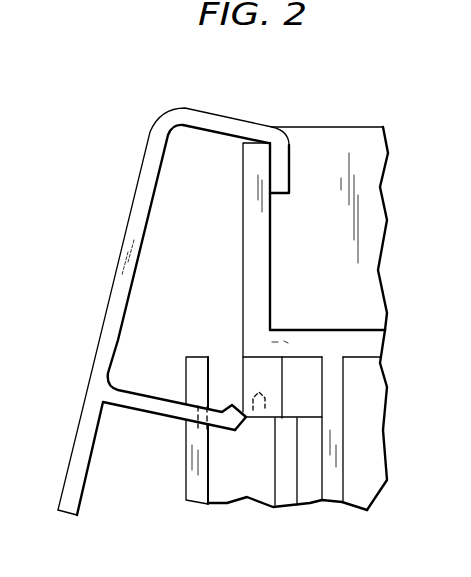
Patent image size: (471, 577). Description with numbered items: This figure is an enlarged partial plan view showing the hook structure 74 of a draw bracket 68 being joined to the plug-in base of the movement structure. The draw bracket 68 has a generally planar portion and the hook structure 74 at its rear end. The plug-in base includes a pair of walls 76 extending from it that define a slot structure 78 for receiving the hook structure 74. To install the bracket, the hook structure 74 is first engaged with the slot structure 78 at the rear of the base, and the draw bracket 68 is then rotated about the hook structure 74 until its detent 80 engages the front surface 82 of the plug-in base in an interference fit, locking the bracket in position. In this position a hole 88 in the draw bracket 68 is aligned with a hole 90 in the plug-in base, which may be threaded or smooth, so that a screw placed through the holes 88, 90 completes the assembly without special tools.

The draw bracket 68 is at (123, 235).
The hook structure 74 is at (289, 168).
The walls 76 is at (258, 245).
The slot structure 78 is at (270, 126).
The detent 80 is at (236, 428).
The surface 82 is at (283, 388).
The hole 88 is at (200, 398).
The hole 90 is at (242, 402).